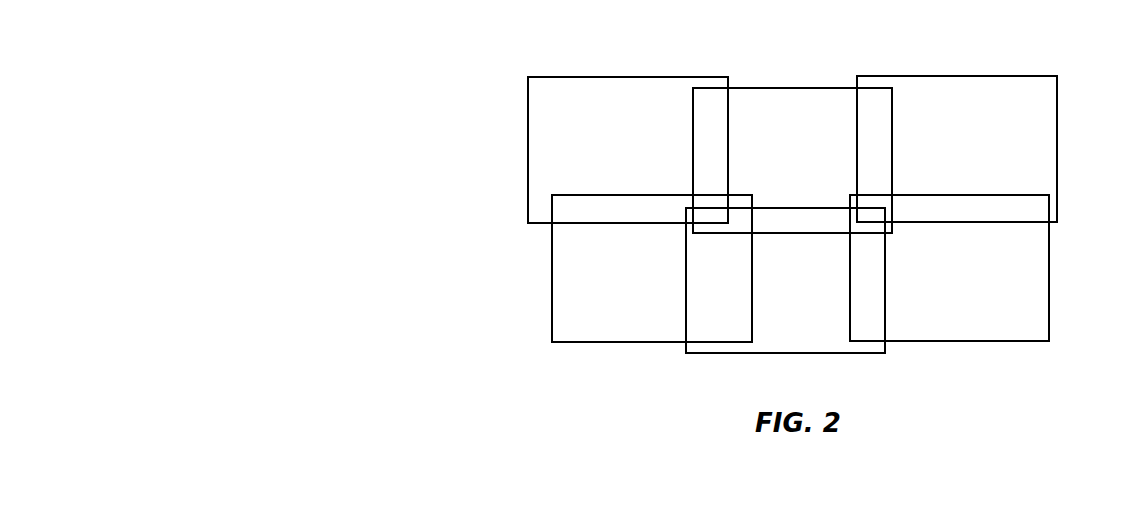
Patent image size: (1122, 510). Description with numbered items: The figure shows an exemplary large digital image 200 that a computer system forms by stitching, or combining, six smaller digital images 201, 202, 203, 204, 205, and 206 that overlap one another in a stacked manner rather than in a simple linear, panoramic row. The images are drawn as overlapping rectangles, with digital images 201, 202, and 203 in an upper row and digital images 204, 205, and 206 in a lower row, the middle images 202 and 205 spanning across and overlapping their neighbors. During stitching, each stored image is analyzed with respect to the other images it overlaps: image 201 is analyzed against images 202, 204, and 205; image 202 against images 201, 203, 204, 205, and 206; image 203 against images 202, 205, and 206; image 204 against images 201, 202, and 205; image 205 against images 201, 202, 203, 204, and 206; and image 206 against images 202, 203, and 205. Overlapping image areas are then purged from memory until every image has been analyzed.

The large digital image 200 is at (468, 135).
The digital image 201 is at (628, 134).
The digital image 202 is at (792, 144).
The digital image 203 is at (957, 132).
The digital image 204 is at (652, 286).
The digital image 205 is at (785, 298).
The digital image 206 is at (949, 286).